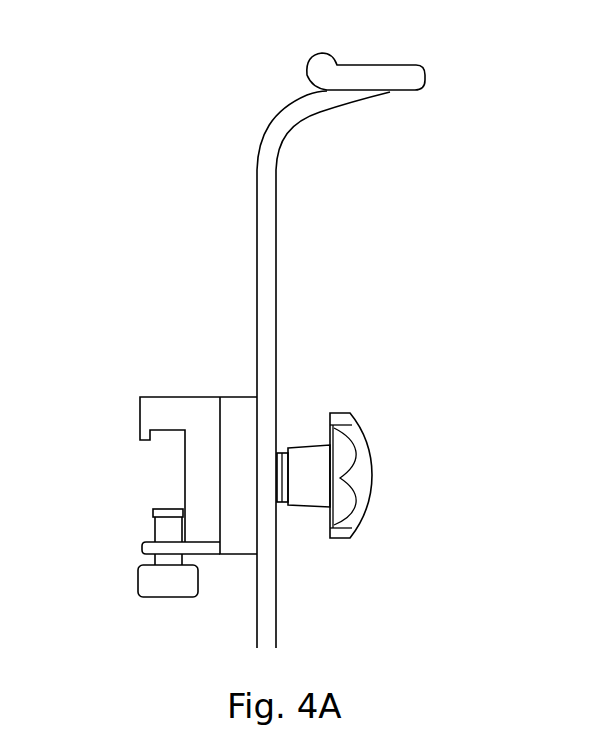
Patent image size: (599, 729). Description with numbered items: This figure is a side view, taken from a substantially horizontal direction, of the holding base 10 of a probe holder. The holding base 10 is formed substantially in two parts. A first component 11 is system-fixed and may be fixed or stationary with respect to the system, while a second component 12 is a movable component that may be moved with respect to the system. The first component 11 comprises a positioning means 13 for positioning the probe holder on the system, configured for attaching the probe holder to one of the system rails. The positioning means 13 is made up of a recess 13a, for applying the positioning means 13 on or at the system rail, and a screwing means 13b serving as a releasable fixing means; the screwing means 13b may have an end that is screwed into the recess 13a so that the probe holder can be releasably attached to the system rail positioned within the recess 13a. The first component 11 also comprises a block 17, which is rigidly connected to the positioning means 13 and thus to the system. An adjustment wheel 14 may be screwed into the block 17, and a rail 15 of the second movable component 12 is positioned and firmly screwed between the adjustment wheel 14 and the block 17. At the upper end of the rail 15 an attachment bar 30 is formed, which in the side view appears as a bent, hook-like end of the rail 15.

The holding base 10 is at (518, 312).
The first component 11 is at (232, 405).
The second component 12 is at (268, 290).
The positioning means 13 is at (163, 547).
The recess 13a is at (160, 458).
The screwing means 13b is at (173, 582).
The adjustment wheel 14 is at (362, 478).
The rail 15 is at (273, 583).
The block 17 is at (240, 542).
The attachment bar 30 is at (408, 72).